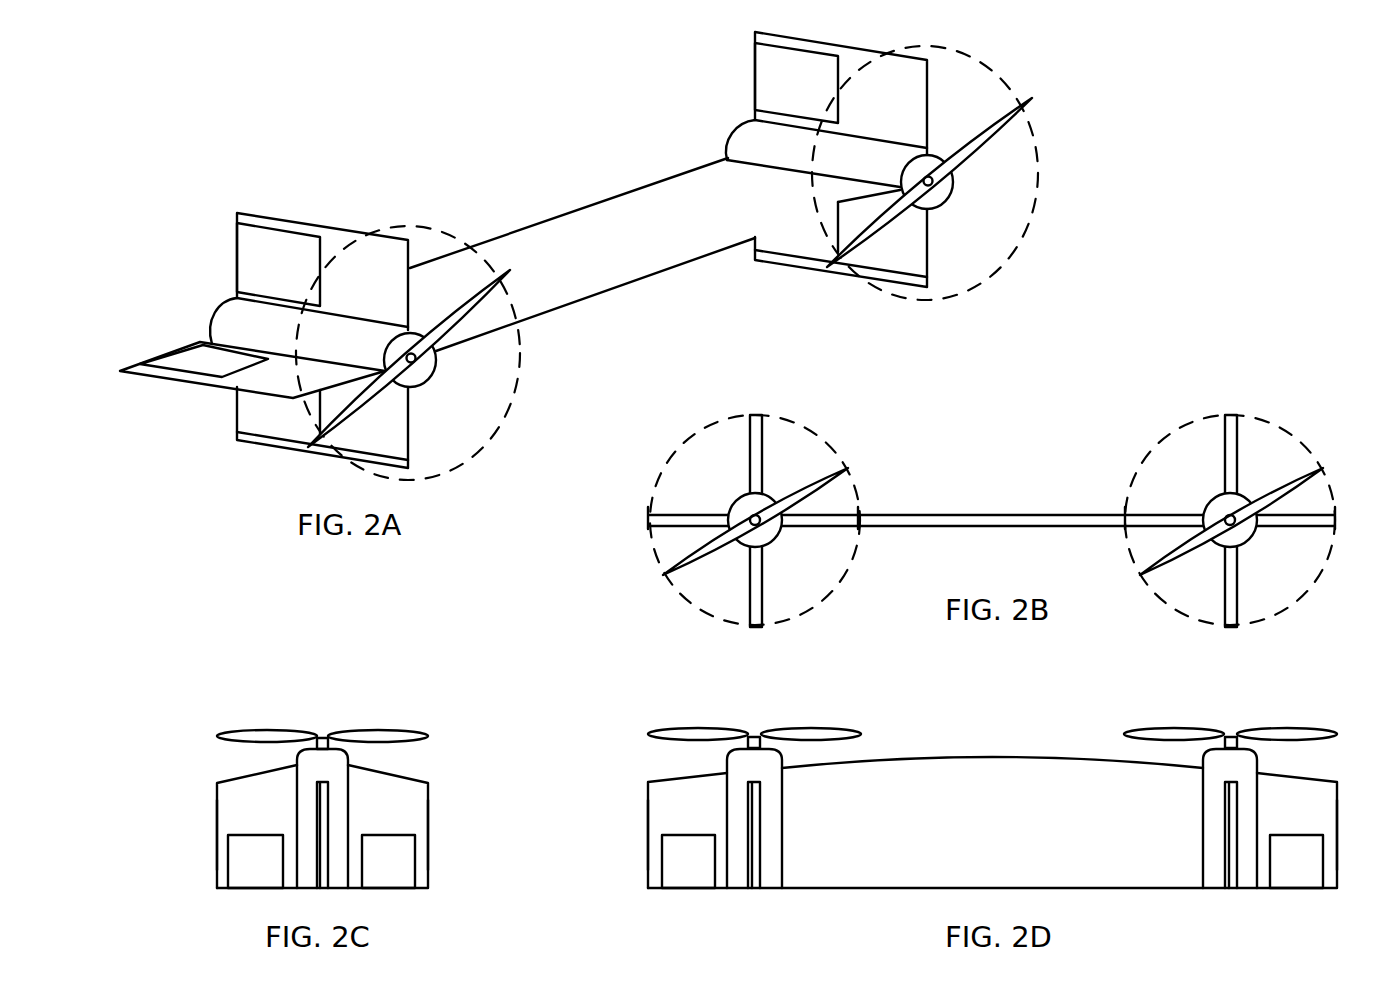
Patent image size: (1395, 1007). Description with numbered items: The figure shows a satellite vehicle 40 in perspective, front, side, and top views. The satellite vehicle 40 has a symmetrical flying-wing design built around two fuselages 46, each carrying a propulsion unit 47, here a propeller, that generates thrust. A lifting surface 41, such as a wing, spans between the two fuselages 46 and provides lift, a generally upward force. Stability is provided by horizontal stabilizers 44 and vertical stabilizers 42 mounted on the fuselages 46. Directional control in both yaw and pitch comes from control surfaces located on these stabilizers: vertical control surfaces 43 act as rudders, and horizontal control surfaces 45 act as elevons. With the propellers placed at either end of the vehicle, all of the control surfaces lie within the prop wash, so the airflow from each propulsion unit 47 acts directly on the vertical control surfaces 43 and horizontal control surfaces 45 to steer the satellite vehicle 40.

In FIG. 2A, the satellite vehicle 40 is at (546, 186).
In FIG. 2B, the satellite vehicle 40 is at (926, 448).
In FIG. 2C, the satellite vehicle 40 is at (272, 694).
In FIG. 2D, the satellite vehicle 40 is at (953, 740).
In FIG. 2A, the lifting surface 41 is at (679, 234).
In FIG. 2B, the lifting surface 41 is at (1018, 513).
In FIG. 2D, the lifting surface 41 is at (1012, 839).
In FIG. 2A, the vertical stabilizers 42 is at (355, 242).
In FIG. 2B, the vertical stabilizers 42 is at (747, 618).
In FIG. 2C, the vertical stabilizers 42 is at (270, 809).
In FIG. 2D, the vertical stabilizers 42 is at (755, 873).
In FIG. 2A, the vertical control surfaces 43 is at (256, 265).
In FIG. 2C, the vertical control surfaces 43 is at (270, 877).
In FIG. 2A, the horizontal stabilizers 44 is at (238, 378).
In FIG. 2B, the horizontal stabilizers 44 is at (648, 520).
In FIG. 2C, the horizontal stabilizers 44 is at (317, 795).
In FIG. 2D, the horizontal stabilizers 44 is at (704, 811).
In FIG. 2A, the horizontal control surfaces 45 is at (196, 357).
In FIG. 2D, the horizontal control surfaces 45 is at (704, 871).
In FIG. 2A, the fuselages 46 is at (779, 150).
In FIG. 2B, the fuselages 46 is at (738, 497).
In FIG. 2C, the fuselages 46 is at (338, 777).
In FIG. 2D, the fuselages 46 is at (1200, 917).
In FIG. 2A, the propulsion unit 47 is at (466, 326).
In FIG. 2B, the propulsion unit 47 is at (663, 573).
In FIG. 2C, the propulsion unit 47 is at (377, 730).
In FIG. 2D, the propulsion unit 47 is at (667, 730).